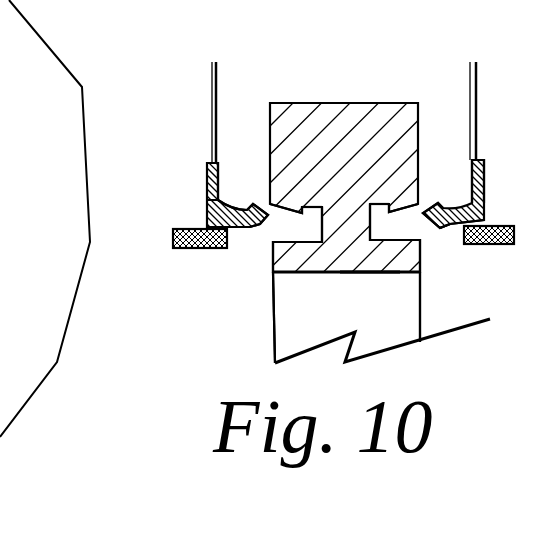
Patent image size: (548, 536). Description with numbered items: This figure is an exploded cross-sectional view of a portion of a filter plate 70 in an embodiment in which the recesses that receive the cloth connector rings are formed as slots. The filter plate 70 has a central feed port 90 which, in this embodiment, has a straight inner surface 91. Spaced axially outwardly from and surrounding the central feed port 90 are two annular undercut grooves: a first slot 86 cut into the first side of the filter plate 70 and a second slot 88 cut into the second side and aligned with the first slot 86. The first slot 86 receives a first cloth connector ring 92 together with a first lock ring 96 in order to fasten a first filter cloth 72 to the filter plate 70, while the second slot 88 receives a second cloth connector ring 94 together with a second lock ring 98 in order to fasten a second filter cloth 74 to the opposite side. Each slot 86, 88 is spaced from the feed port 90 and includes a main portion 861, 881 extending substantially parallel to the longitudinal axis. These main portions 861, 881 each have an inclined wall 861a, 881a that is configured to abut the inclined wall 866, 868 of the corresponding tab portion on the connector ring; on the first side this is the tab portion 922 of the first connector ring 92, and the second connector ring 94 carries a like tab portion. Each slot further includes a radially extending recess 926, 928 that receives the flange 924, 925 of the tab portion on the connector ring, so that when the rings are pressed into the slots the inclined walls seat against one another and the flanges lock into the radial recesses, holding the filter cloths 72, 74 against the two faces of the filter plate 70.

The filter plate 70 is at (344, 102).
The first filter cloth 72 is at (481, 97).
The second filter cloth 74 is at (212, 103).
The first slot 86 is at (395, 233).
The main portion of first slot 861 is at (400, 224).
The inclined wall of first slot main portion 861a is at (409, 204).
The inclined wall of tab portion 866 is at (484, 188).
The second slot 88 is at (295, 232).
The main portion of second slot 881 is at (283, 229).
The inclined wall of second slot main portion 881a is at (293, 205).
The central feed port 90 is at (328, 334).
The straight inner surface 91 is at (360, 273).
The first cloth connector ring 92 is at (484, 160).
The tab portion 922 is at (449, 228).
The flange 924 is at (240, 250).
The flange 925 is at (256, 202).
The radially extending recess of first slot 926 is at (377, 204).
The radially extending recess of second slot 928 is at (314, 206).
The second cloth connector ring 94 is at (207, 175).
The first lock ring 96 is at (500, 222).
The second lock ring 98 is at (173, 240).
The inclined wall of tab portion 868 is at (224, 208).